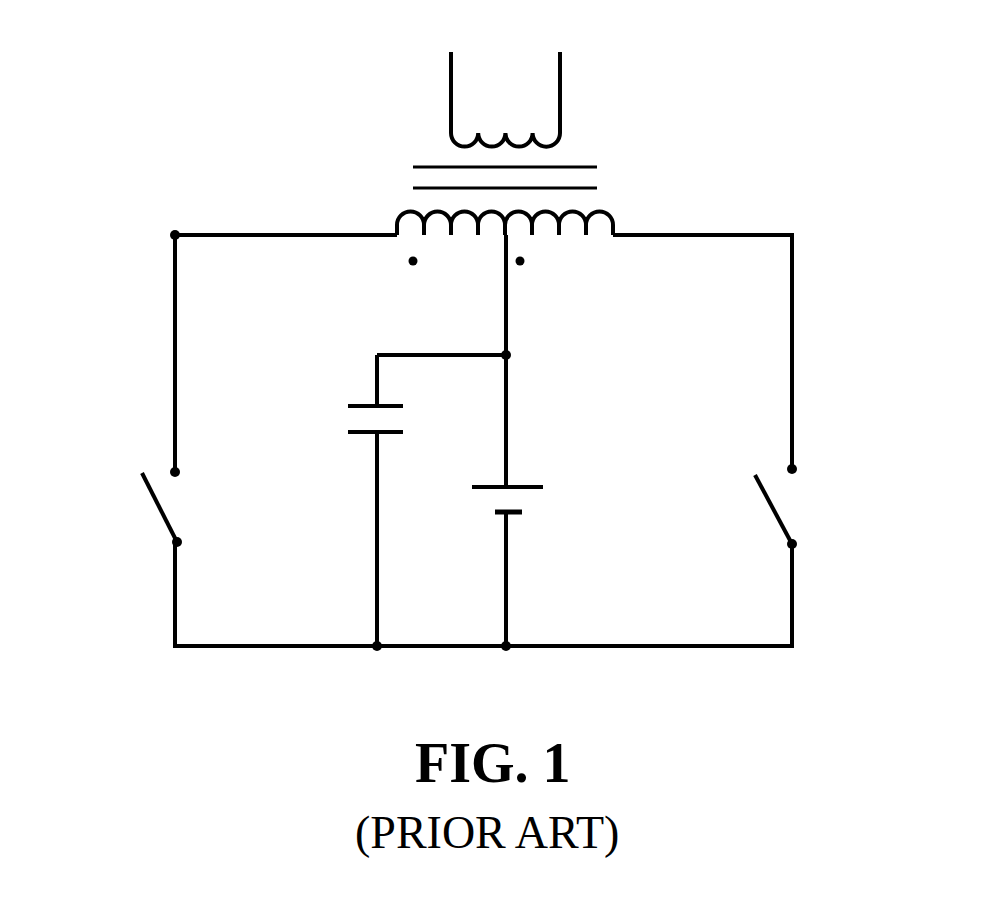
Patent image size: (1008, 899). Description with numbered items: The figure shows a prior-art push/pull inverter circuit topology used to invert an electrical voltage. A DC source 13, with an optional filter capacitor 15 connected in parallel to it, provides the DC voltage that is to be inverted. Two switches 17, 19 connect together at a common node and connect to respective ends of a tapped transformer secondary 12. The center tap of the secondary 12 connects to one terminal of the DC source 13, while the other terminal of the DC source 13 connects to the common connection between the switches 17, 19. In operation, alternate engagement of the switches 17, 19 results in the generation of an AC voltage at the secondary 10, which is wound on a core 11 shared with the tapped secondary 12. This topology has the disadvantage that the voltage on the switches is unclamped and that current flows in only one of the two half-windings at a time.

The secondary 10 is at (560, 78).
The transformer core 11 is at (597, 167).
The tapped transformer secondary 12 is at (613, 222).
The DC source 13 is at (527, 485).
The filter capacitor 15 is at (360, 402).
The switch 17 is at (162, 512).
The switch 19 is at (773, 517).